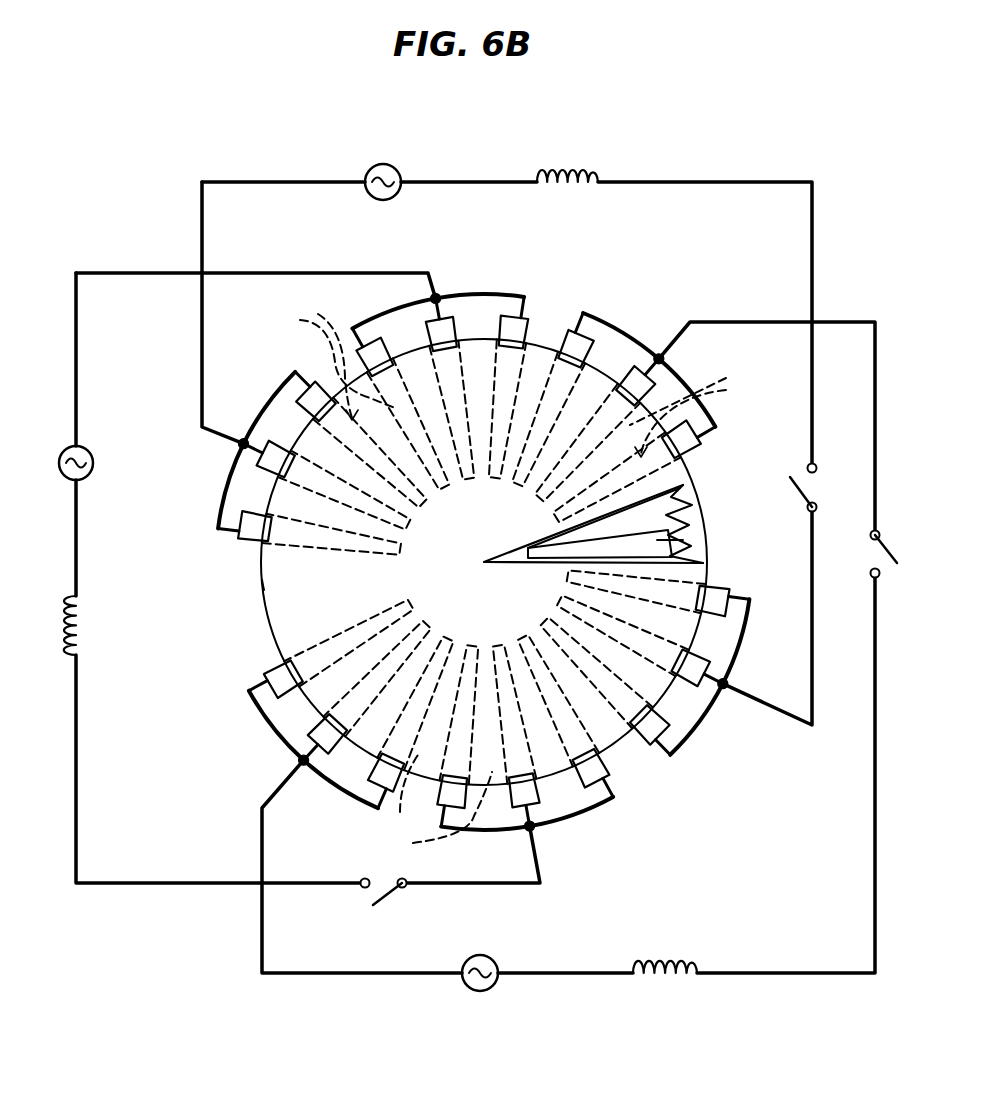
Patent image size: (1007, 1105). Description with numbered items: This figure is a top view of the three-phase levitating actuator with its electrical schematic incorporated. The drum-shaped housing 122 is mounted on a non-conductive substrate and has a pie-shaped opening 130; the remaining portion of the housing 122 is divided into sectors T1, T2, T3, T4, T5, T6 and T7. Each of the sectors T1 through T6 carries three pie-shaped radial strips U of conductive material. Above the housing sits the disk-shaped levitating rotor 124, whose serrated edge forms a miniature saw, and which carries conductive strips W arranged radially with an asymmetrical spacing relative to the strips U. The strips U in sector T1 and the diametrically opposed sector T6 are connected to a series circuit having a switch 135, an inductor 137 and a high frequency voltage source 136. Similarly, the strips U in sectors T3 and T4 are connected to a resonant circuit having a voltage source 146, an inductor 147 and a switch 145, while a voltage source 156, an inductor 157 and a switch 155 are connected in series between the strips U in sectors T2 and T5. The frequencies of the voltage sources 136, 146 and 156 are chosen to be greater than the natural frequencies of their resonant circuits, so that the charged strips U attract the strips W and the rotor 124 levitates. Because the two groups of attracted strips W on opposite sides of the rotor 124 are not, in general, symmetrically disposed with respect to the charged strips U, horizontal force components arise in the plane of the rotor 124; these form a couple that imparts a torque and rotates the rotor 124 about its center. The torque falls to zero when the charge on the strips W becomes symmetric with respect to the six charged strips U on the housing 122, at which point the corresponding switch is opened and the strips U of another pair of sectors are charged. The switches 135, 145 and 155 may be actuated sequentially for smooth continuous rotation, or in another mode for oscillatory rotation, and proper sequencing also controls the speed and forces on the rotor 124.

The drum-shaped housing 122 is at (292, 637).
The levitating rotor 124 is at (684, 489).
The pie-shaped opening 130 is at (708, 560).
The switch 135 is at (810, 477).
The high frequency voltage source 136 is at (383, 164).
The inductor 137 is at (566, 168).
The switch 145 is at (880, 540).
The voltage source 146 is at (480, 992).
The inductor 147 is at (657, 992).
The switch 155 is at (388, 890).
The voltage source 156 is at (95, 468).
The inductor 157 is at (90, 632).
The sector T1 is at (216, 452).
The sector T2 is at (476, 268).
The sector T3 is at (662, 336).
The sector T4 is at (275, 760).
The sector T5 is at (568, 848).
The sector T6 is at (732, 718).
The sector T7 is at (287, 592).
The radial strips of conductive material U is at (513, 581).
The conductive strips W is at (683, 532).